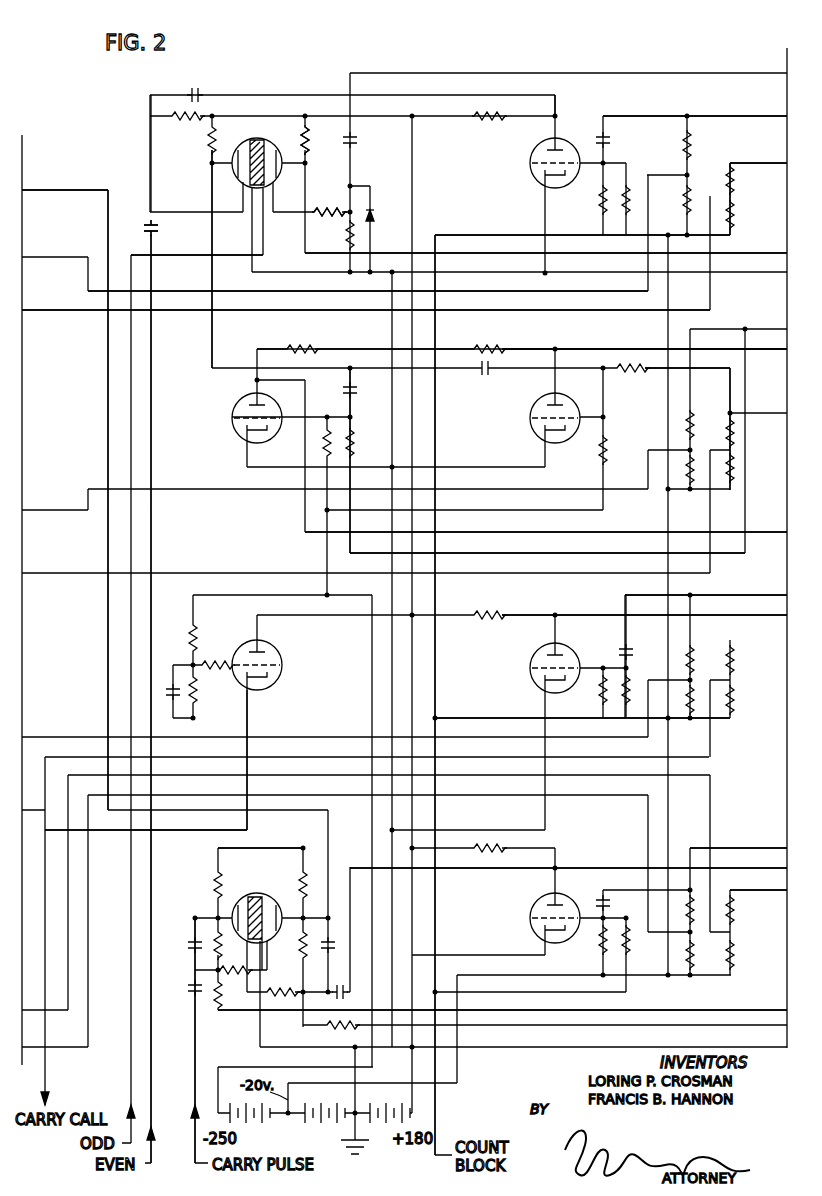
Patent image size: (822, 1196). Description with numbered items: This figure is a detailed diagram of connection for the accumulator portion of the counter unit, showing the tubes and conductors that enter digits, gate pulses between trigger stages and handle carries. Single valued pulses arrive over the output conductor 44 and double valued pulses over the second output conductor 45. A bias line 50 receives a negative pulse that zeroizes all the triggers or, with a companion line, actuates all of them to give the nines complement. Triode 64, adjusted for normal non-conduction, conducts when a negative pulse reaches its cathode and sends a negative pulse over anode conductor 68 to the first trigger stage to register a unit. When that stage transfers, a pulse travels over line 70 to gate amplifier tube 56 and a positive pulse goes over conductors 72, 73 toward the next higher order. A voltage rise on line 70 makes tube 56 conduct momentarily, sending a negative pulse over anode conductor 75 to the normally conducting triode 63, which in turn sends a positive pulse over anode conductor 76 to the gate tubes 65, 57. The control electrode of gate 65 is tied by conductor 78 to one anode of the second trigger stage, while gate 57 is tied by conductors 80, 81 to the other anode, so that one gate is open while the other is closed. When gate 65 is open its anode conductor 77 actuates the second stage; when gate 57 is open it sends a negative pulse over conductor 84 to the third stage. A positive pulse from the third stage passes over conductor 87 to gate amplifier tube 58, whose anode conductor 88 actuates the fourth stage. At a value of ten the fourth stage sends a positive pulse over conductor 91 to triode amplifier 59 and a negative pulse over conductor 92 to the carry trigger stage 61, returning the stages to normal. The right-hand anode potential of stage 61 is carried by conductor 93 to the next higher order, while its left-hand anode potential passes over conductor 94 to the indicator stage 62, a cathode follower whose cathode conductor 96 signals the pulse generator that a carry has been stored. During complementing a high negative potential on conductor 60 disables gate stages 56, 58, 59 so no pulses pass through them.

The conductor 93 is at (597, 73).
The anode conductor 75 is at (445, 95).
The line 70 is at (650, 116).
The conductor 72 is at (754, 163).
The triode 63 is at (242, 150).
The triode 64 is at (277, 150).
The anode conductor 76 is at (212, 200).
The anode conductor 68 is at (306, 205).
The gate amplifier tube 56 is at (538, 158).
The conductor 60 is at (488, 235).
The output conductor 44 is at (143, 255).
The conductor 73 is at (82, 300).
The second output conductor 45 is at (153, 356).
The conductor 84 is at (598, 348).
The gate tube 65 is at (242, 408).
The anode conductor 77 is at (306, 402).
The gate tube 57 is at (538, 408).
The conductor 78 is at (350, 460).
The conductor 80 is at (712, 372).
The anode conductor 81 is at (770, 403).
The indicator stage 62 is at (243, 648).
The conductor 87 is at (624, 605).
The anode conductor 88 is at (698, 617).
The cathode conductor 96 is at (248, 720).
The gate amplifier tube 58 is at (544, 658).
The conductor 92 is at (360, 866).
The conductor 91 is at (724, 848).
The carry trigger stage 61 is at (262, 893).
The conductor 94 is at (195, 893).
The triode amplifier 59 is at (544, 912).
The bias line 50 is at (240, 1012).